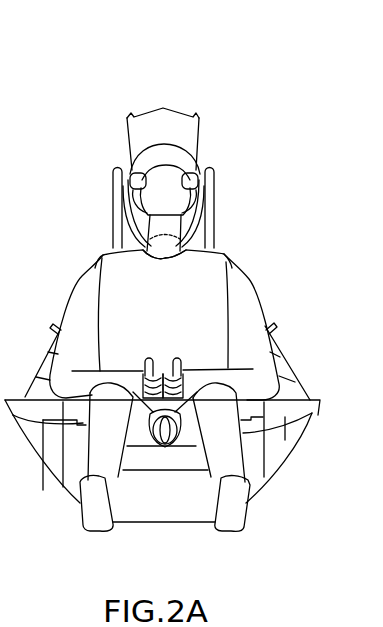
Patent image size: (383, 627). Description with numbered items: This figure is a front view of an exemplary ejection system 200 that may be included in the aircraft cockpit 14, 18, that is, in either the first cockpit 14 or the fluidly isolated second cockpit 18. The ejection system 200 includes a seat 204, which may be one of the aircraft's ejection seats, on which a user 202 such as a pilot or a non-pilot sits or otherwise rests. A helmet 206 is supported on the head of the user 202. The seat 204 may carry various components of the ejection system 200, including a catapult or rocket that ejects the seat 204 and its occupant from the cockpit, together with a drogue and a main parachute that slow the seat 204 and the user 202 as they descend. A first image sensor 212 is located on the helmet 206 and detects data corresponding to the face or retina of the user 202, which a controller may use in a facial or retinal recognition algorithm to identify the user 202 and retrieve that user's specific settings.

The first cockpit 14 is at (144, 102).
The second cockpit 18 is at (145, 104).
The ejection system 200 is at (75, 219).
The user 202 is at (256, 273).
The seat 204 is at (132, 515).
The helmet 206 is at (177, 160).
The first image sensor 212 is at (197, 181).